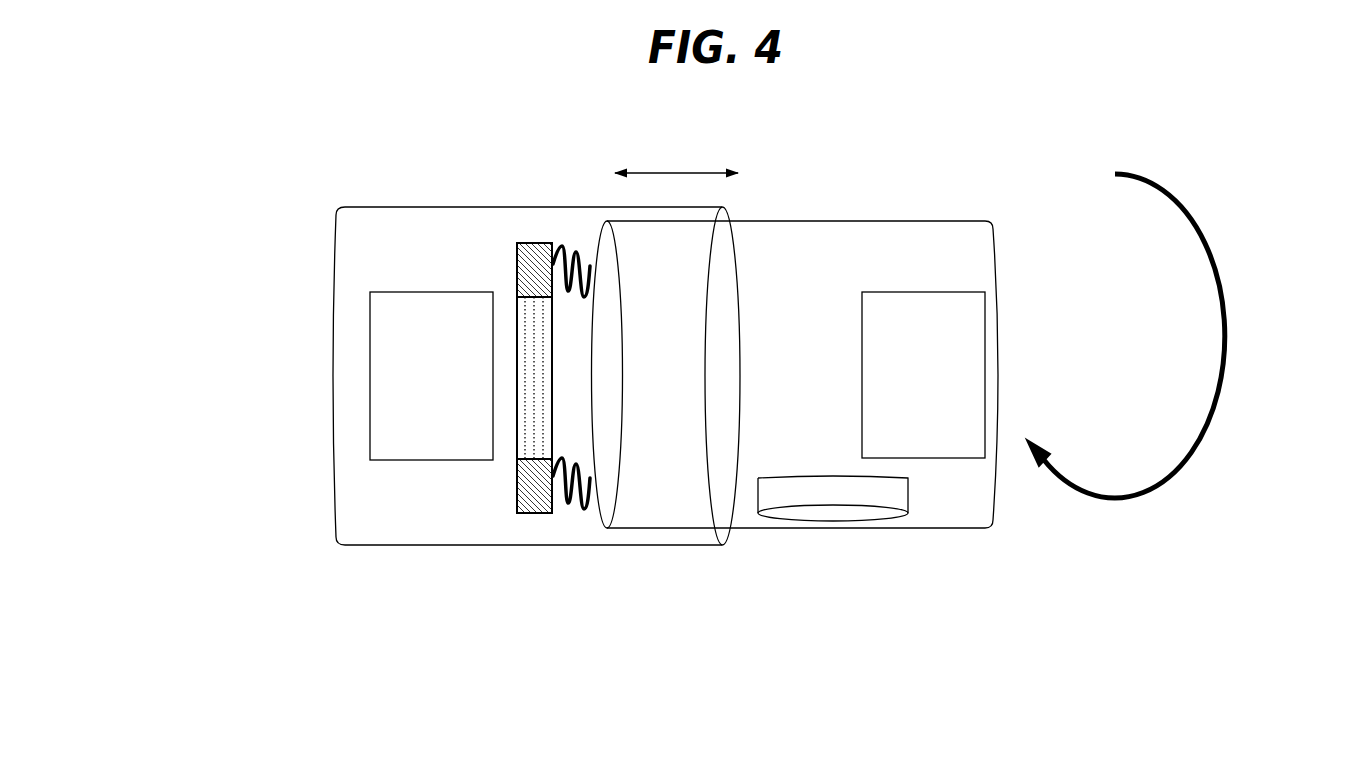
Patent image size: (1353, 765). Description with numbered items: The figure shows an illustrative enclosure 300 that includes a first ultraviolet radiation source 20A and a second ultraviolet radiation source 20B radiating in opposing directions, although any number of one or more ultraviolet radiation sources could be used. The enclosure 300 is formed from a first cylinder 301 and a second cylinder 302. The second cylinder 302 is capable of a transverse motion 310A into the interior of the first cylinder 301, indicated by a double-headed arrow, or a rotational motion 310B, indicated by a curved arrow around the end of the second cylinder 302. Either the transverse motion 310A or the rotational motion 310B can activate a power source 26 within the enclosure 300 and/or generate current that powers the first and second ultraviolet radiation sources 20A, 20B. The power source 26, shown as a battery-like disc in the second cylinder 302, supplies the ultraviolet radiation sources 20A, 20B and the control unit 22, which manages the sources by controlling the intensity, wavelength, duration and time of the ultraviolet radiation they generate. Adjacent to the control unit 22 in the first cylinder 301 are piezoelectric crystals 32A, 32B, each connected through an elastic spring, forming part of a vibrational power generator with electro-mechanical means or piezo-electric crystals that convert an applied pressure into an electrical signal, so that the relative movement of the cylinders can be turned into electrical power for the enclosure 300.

The enclosure 300 is at (210, 150).
The first cylinder 301 is at (333, 275).
The second cylinder 302 is at (885, 212).
The transverse motion 310A is at (676, 157).
The rotational motion 310B is at (1228, 337).
The first ultraviolet radiation source 20A is at (431, 376).
The second ultraviolet radiation source 20B is at (923, 375).
The control unit 22 is at (547, 393).
The piezoelectric crystal 32A is at (515, 507).
The piezoelectric crystal 32B is at (515, 278).
The power source 26 is at (833, 507).